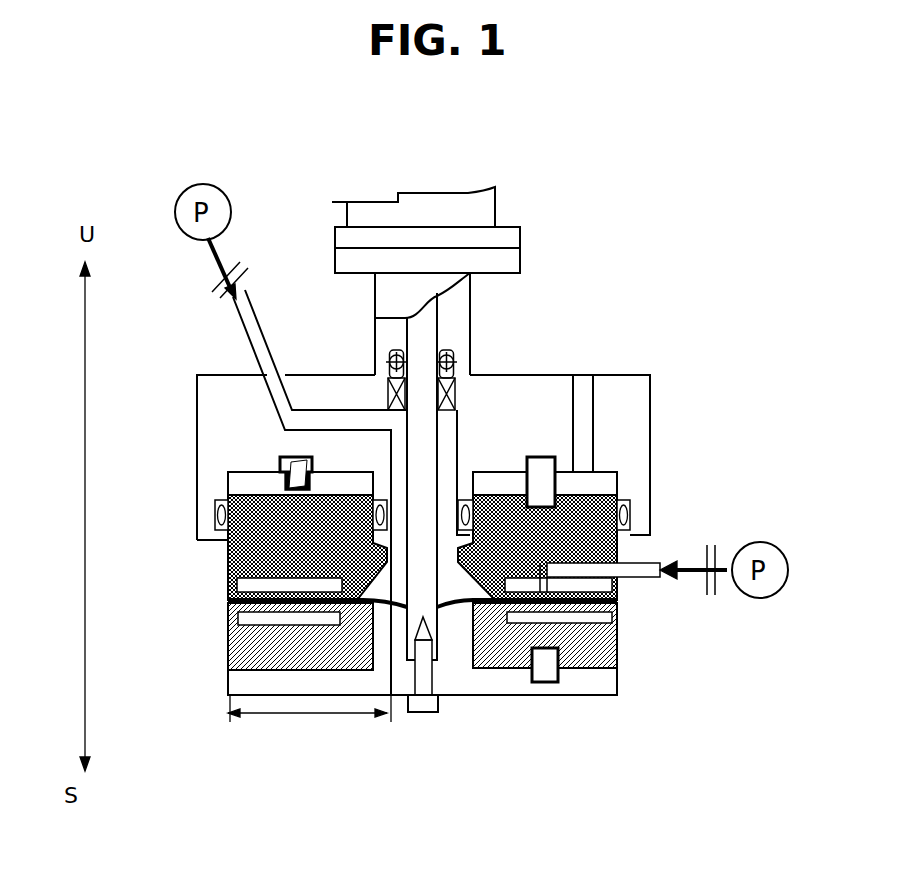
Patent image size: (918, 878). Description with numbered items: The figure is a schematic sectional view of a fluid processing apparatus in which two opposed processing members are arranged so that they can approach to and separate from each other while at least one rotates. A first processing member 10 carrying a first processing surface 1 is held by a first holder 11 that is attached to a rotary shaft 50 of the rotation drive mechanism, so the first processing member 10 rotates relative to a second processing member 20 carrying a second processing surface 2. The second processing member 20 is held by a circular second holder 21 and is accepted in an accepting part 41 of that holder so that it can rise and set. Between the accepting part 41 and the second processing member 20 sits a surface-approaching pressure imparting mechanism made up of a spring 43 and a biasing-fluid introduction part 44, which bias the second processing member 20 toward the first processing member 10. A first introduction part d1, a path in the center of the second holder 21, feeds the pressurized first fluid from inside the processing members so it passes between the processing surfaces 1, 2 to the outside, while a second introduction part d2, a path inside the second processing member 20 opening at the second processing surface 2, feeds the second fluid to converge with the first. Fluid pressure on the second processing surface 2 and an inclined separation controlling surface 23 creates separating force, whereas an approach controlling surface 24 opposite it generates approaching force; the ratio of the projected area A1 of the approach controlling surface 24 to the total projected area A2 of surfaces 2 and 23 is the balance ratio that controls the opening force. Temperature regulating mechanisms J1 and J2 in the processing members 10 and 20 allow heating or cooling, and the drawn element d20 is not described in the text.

The first processing surface 1 is at (327, 618).
The second processing surface 2 is at (312, 587).
The first processing member 10 is at (618, 655).
The first holder 11 is at (583, 680).
The second processing member 20 is at (228, 498).
The second holder 21 is at (628, 423).
The separation controlling surface 23 is at (463, 610).
The approach controlling surface 24 is at (442, 462).
The accepting part 41 is at (353, 482).
The spring 43 is at (265, 484).
The biasing-fluid introduction part 44 is at (582, 405).
The rotary shaft 50 is at (434, 640).
The projected area of the approach controlling surface A1 is at (393, 696).
The total projected area of the second processing surface and separation controlling A2 is at (300, 713).
The temperature regulating mechanism J1 is at (312, 628).
The temperature regulating mechanism J2 is at (230, 553).
The first introduction part d1 is at (258, 350).
The second introduction part d2 is at (632, 568).
The peg d20 is at (590, 493).